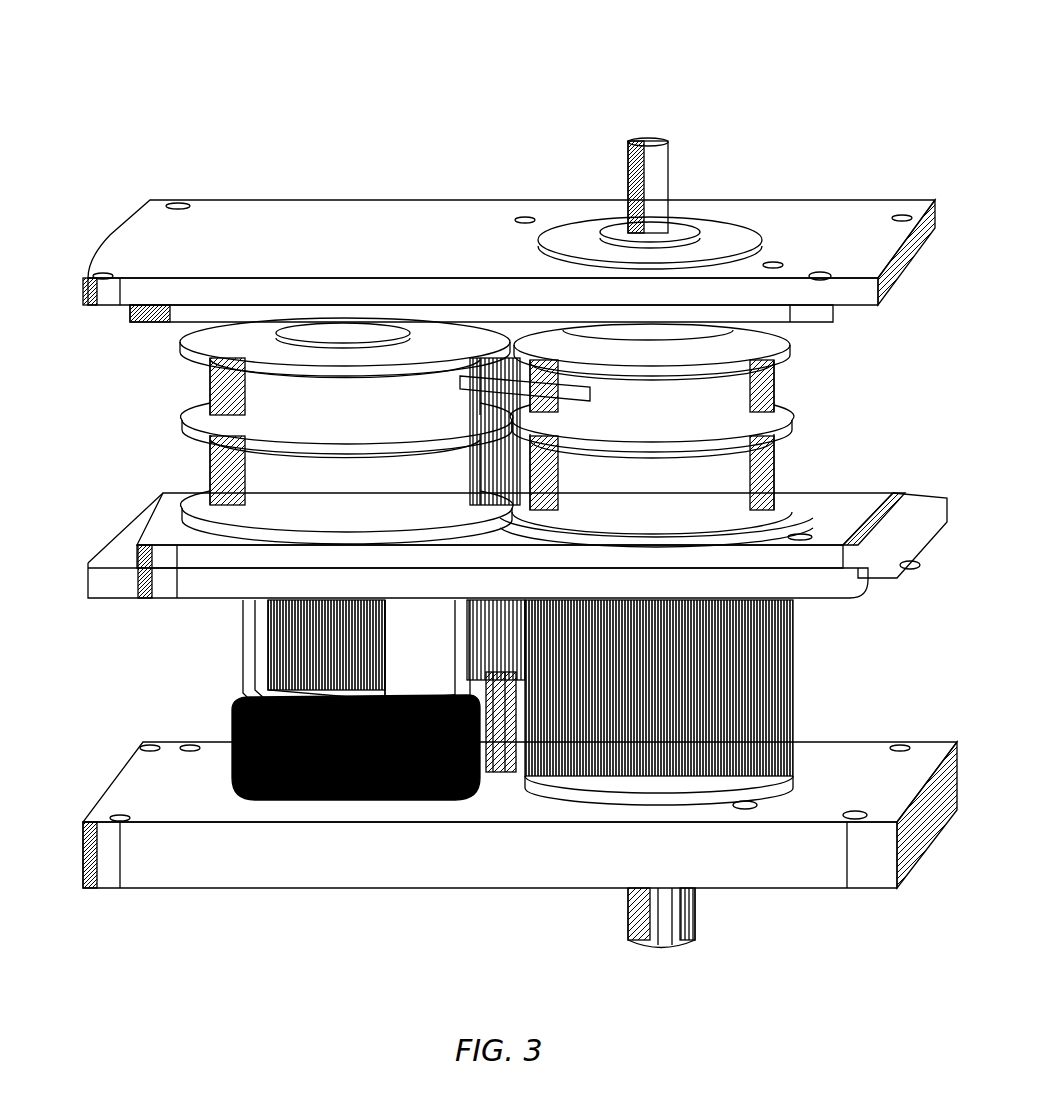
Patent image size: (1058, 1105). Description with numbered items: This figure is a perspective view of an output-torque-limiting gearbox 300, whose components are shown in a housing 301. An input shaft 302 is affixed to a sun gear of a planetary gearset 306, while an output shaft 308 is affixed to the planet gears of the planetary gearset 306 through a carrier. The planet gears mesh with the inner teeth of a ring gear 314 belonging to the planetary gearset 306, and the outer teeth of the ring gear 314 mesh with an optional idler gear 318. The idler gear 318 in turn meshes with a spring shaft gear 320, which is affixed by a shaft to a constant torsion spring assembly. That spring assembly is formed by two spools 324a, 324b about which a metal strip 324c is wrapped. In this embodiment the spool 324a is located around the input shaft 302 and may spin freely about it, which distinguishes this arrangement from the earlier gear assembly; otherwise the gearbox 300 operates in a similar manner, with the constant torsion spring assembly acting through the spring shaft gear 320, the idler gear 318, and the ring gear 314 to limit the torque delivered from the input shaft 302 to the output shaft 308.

The output-torque-limiting gearbox 300 is at (501, 516).
The housing 301 is at (180, 886).
The input shaft 302 is at (650, 136).
The planetary gearset 306 is at (555, 732).
The output shaft 308 is at (655, 946).
The ring gear 314 is at (796, 679).
The idler gear 318 is at (510, 770).
The spring shaft gear 320 is at (262, 643).
The spool 324a is at (797, 420).
The spool 324b is at (185, 420).
The metal strip 324c is at (494, 490).